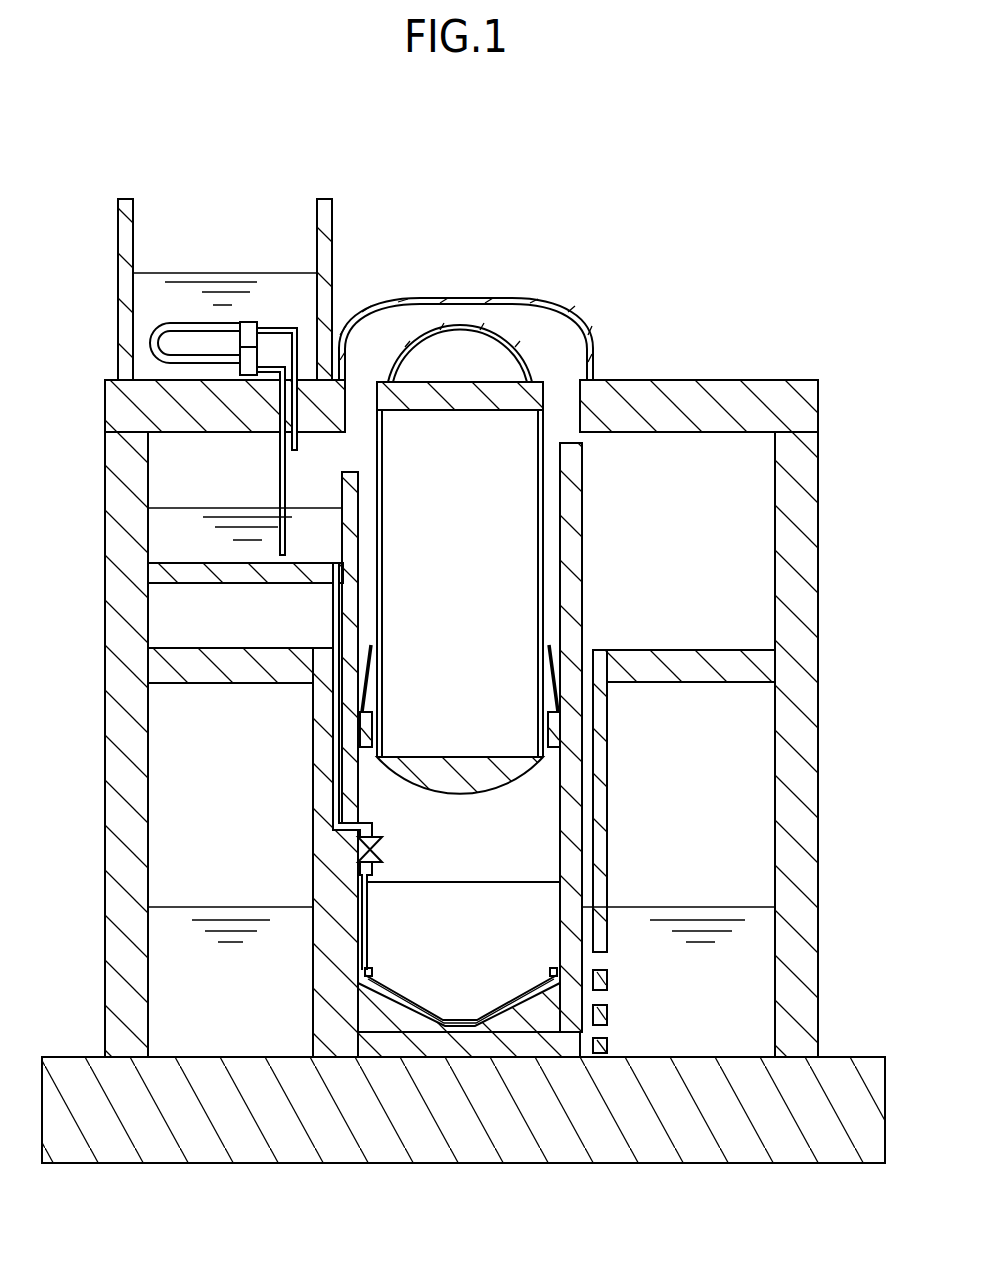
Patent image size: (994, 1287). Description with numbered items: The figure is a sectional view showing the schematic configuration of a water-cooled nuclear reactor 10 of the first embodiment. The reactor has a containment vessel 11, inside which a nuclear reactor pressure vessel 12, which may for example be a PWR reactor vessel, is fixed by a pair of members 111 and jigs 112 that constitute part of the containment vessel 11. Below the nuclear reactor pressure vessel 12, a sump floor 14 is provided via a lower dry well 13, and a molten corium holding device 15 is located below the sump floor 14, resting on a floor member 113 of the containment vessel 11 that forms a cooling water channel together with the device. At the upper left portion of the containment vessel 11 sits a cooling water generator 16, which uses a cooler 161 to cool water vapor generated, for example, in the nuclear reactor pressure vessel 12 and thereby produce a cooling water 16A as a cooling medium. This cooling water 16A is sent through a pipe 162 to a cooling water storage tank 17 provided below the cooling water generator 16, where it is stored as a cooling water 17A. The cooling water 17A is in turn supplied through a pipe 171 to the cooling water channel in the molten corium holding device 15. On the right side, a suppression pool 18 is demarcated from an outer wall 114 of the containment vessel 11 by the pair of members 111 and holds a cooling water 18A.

The water-cooled nuclear reactor 10 is at (822, 305).
The containment vessel 11 is at (729, 371).
The nuclear reactor pressure vessel 12 is at (543, 388).
The lower dry well 13 is at (553, 857).
The sump floor 14 is at (462, 880).
The molten corium holding device 15 is at (468, 964).
The cooling water generator 16 is at (275, 298).
The cooling water 16A is at (244, 306).
The cooler 161 is at (201, 330).
The pipe 162 is at (282, 492).
The cooling water storage tank 17 is at (305, 498).
The cooling water 17A is at (187, 520).
The pipe 171 is at (363, 952).
The suppression pool 18 is at (762, 825).
The cooling water 18A is at (692, 917).
The members 111 is at (567, 957).
The jigs 112 is at (368, 746).
The floor member 113 is at (320, 1043).
The outer wall 114 is at (807, 895).